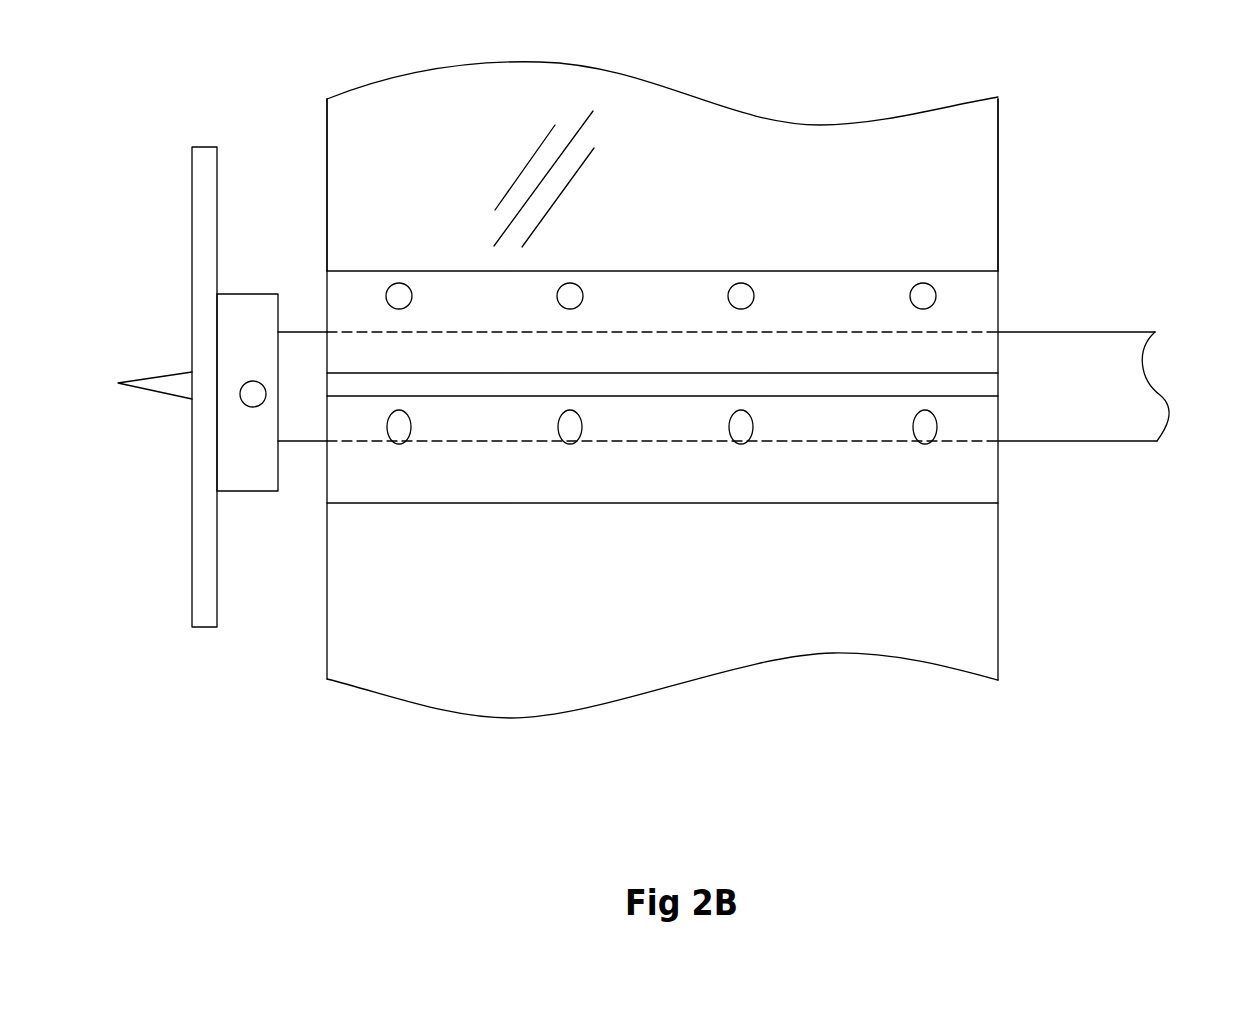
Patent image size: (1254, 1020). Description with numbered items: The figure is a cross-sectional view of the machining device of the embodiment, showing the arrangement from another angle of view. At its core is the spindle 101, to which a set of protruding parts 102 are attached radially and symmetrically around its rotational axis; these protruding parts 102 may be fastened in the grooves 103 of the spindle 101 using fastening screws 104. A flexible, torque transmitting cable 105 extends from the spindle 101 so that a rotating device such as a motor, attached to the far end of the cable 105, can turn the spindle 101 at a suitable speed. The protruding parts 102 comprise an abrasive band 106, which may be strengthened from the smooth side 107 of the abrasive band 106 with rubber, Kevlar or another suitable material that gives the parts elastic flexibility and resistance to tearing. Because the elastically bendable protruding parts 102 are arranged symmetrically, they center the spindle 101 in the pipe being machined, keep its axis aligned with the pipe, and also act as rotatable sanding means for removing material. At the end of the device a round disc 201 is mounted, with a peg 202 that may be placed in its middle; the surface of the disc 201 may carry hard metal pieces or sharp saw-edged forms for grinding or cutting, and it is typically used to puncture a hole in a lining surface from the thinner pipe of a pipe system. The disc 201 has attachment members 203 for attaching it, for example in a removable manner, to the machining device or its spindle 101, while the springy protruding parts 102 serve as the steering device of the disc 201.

The spindle 101 is at (998, 298).
The protruding parts 102 is at (998, 128).
The grooves 103 is at (998, 391).
The fastening screws 104 is at (741, 281).
The flexible torque transmitting cable 105 is at (1145, 323).
The abrasive band 106 is at (573, 179).
The smooth side of the abrasive band 107 is at (662, 390).
The round disc 201 is at (205, 147).
The peg 202 is at (145, 375).
The attachment members 203 is at (265, 294).